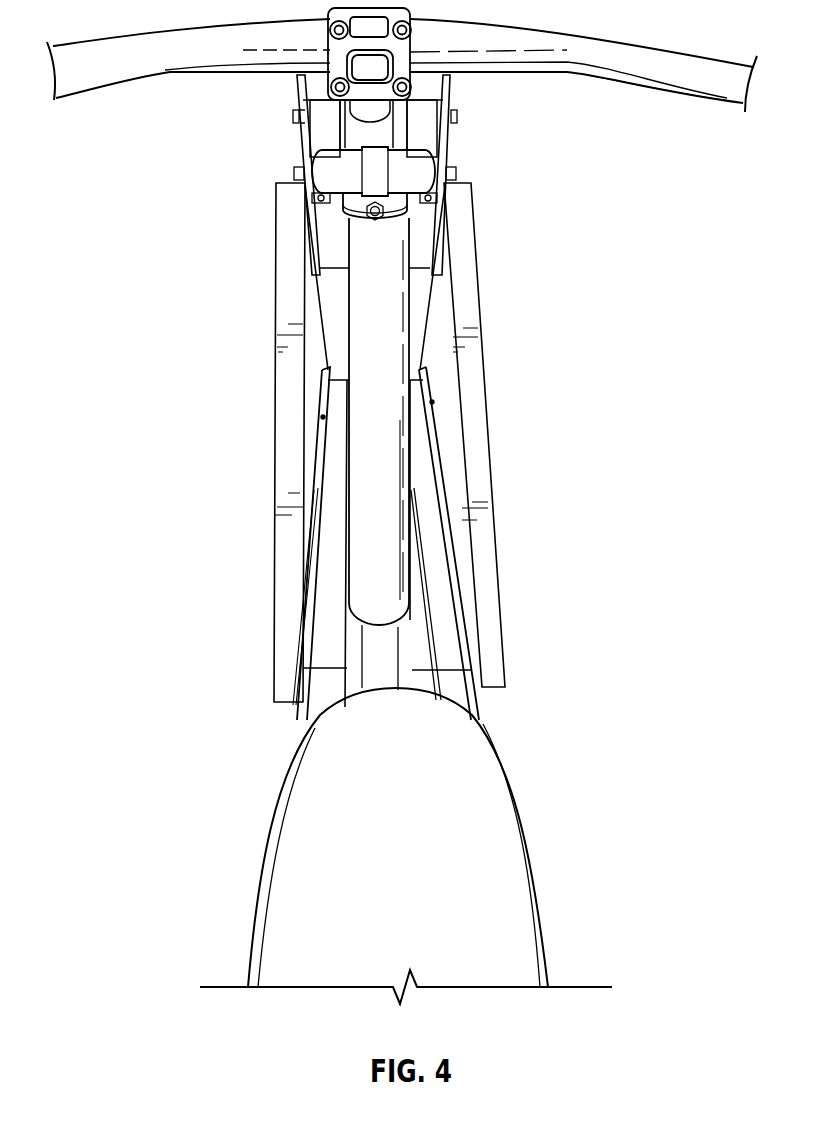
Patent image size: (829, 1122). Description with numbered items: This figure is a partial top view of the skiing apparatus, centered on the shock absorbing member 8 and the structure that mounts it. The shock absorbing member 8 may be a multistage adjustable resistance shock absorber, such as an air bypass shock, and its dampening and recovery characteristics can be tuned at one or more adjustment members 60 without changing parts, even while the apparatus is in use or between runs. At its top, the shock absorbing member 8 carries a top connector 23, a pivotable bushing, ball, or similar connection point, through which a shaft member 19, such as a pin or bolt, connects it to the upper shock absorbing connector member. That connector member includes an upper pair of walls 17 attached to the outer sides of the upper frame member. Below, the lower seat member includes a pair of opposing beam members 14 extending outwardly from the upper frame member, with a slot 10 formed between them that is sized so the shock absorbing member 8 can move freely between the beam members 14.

The shock absorbing member 8 is at (377, 503).
The slot 10 is at (412, 675).
The opposing beam members 14 is at (332, 652).
The upper pair of walls 17 is at (297, 137).
The shaft member 19 is at (292, 170).
The top connector 23 is at (375, 170).
The adjustment member 60 is at (392, 206).